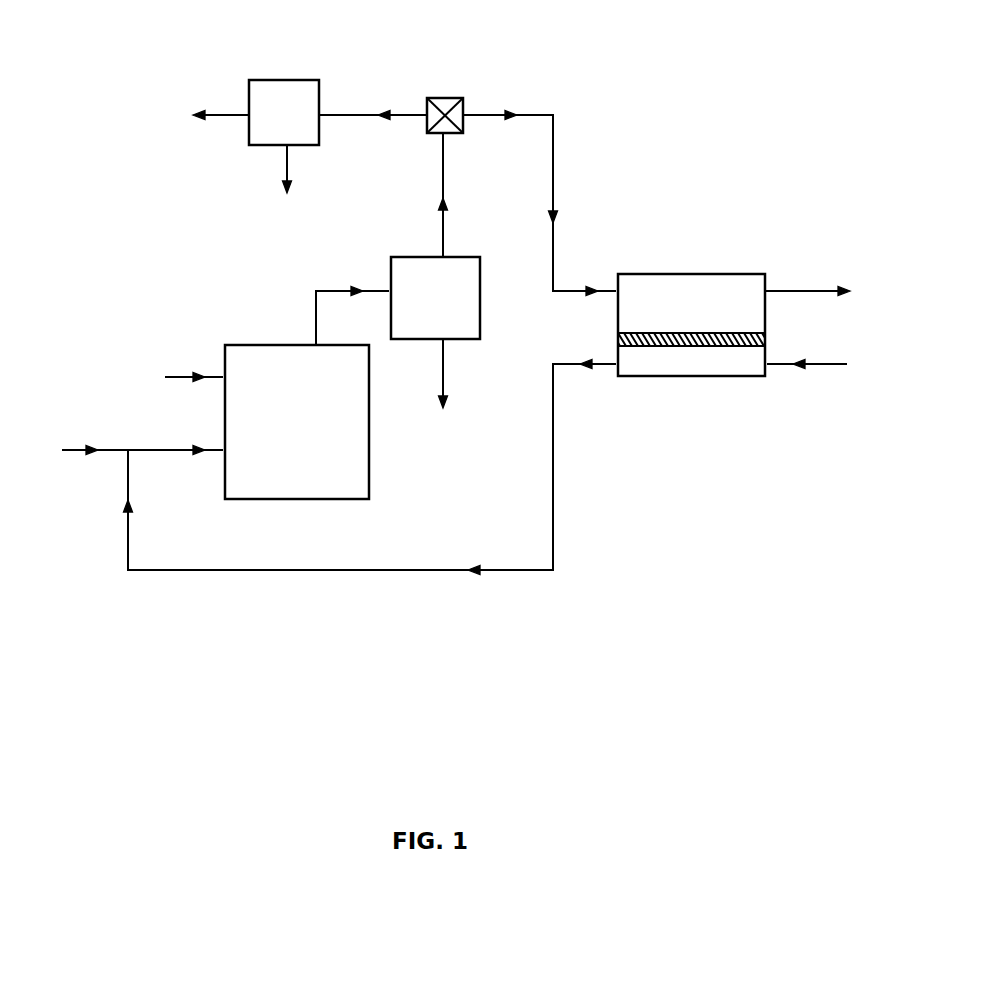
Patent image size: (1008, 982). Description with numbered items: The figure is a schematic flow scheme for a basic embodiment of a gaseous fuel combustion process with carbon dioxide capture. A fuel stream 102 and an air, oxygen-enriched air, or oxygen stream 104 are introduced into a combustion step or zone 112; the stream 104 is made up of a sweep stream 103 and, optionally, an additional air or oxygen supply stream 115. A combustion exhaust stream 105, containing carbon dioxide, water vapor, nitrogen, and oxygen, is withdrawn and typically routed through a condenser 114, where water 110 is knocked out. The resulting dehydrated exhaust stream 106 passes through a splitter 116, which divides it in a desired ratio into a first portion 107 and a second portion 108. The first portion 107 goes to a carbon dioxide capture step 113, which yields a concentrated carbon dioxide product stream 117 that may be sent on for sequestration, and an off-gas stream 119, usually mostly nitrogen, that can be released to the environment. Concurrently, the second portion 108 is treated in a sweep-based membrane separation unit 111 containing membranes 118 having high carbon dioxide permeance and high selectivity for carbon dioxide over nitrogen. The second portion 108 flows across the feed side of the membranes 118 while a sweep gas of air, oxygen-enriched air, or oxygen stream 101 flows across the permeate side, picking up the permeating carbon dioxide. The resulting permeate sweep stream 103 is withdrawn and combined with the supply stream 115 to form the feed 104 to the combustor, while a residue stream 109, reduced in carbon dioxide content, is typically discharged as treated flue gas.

The sweep gas stream 101 is at (827, 365).
The fuel stream 102 is at (172, 378).
The sweep stream 103 is at (370, 478).
The air or oxygen stream 104 is at (175, 440).
The combustion exhaust stream 105 is at (352, 305).
The dehydrated exhaust stream 106 is at (465, 195).
The first portion 107 is at (373, 105).
The second portion 108 is at (539, 193).
The residue stream 109 is at (828, 293).
The water 110 is at (445, 390).
The membrane separation unit 111 is at (730, 274).
The combustion step or zone 112 is at (258, 345).
The carbon dioxide capture step 113 is at (287, 80).
The condenser 114 is at (480, 305).
The additional air or oxygen supply stream 115 is at (84, 440).
The splitter 116 is at (450, 98).
The concentrated carbon dioxide product stream 117 is at (288, 185).
The membranes 118 is at (765, 337).
The off-gas stream 119 is at (198, 113).